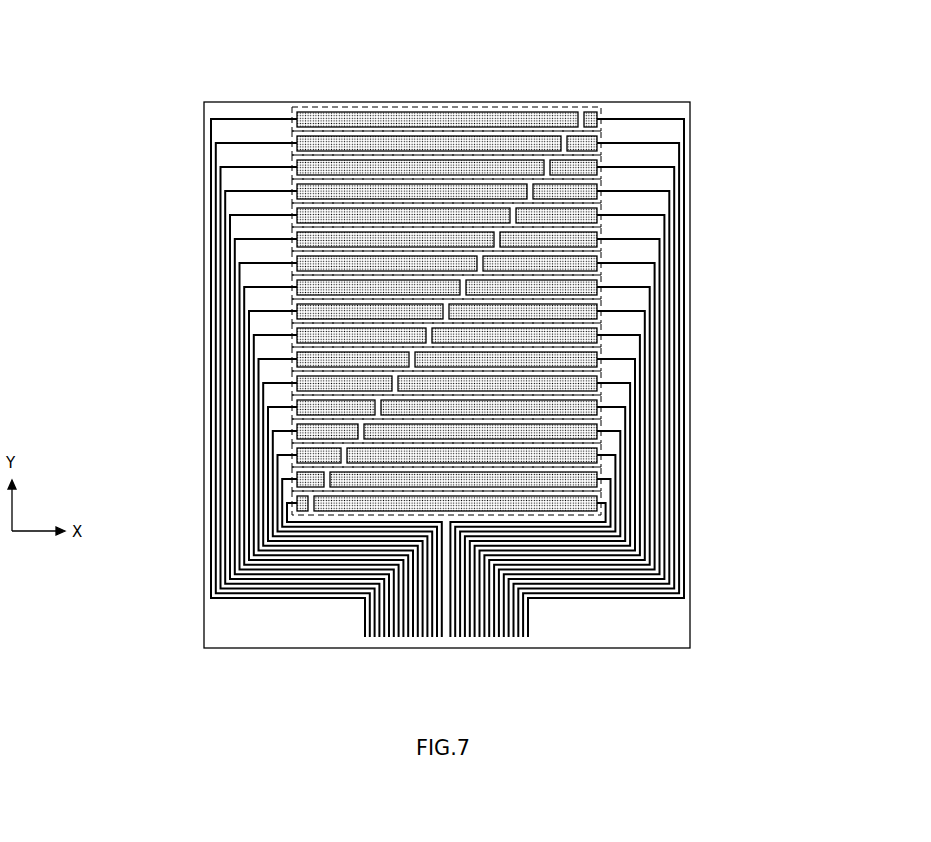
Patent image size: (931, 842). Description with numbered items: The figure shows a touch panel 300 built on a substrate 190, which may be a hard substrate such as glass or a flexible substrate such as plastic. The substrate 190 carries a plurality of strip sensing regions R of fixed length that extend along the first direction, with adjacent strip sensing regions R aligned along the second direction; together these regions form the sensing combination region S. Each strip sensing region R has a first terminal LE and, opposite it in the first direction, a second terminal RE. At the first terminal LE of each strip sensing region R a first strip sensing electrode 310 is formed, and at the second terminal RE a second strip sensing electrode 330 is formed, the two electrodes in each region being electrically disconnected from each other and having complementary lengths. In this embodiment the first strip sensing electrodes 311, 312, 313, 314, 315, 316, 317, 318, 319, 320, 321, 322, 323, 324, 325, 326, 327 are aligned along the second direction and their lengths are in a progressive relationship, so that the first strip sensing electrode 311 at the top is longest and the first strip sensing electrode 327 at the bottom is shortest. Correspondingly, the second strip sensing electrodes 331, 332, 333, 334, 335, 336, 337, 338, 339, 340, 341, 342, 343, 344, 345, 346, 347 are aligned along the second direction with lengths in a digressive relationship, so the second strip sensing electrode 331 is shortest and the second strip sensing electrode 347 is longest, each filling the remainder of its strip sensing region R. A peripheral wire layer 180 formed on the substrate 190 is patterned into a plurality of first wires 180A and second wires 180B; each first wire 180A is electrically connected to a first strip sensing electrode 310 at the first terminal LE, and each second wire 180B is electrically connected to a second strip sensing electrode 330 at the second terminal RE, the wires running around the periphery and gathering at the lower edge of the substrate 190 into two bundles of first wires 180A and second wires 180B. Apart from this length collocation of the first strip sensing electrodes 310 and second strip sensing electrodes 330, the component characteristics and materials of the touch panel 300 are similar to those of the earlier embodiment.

The touch panel 300 is at (767, 89).
The substrate 190 is at (690, 623).
The first strip sensing electrode 310 is at (354, 312).
The first strip sensing electrode 311 is at (296, 122).
The first strip sensing electrode 312 is at (296, 146).
The first strip sensing electrode 313 is at (296, 170).
The first strip sensing electrode 314 is at (296, 194).
The first strip sensing electrode 315 is at (296, 218).
The first strip sensing electrode 316 is at (296, 242).
The first strip sensing electrode 317 is at (296, 266).
The first strip sensing electrode 318 is at (296, 290).
The first strip sensing electrode 319 is at (296, 314).
The first strip sensing electrode 320 is at (296, 338).
The first strip sensing electrode 321 is at (296, 362).
The first strip sensing electrode 322 is at (296, 386).
The first strip sensing electrode 323 is at (296, 410).
The first strip sensing electrode 324 is at (296, 434).
The first strip sensing electrode 325 is at (296, 458).
The first strip sensing electrode 326 is at (296, 482).
The first strip sensing electrode 327 is at (296, 506).
The second strip sensing electrode 330 is at (538, 312).
The second strip sensing electrode 331 is at (598, 122).
The second strip sensing electrode 332 is at (598, 146).
The second strip sensing electrode 333 is at (598, 170).
The second strip sensing electrode 334 is at (598, 194).
The second sensing electrode 335 is at (598, 218).
The second strip sensing electrode 336 is at (598, 242).
The second strip sensing electrode 337 is at (598, 266).
The second strip sensing electrode 338 is at (598, 290).
The second strip sensing electrode 339 is at (598, 314).
The second strip sensing electrode 340 is at (598, 338).
The second strip sensing electrode 341 is at (598, 362).
The second strip sensing electrode 342 is at (598, 386).
The second strip sensing electrode 343 is at (598, 410).
The second strip sensing electrode 344 is at (598, 434).
The second strip sensing electrode 345 is at (598, 458).
The second strip sensing electrode 346 is at (598, 482).
The second strip sensing electrode 347 is at (598, 506).
The peripheral wire layer 180 is at (447, 395).
The first wires 180A is at (442, 639).
The second wires 180B is at (528, 639).
The sensing combination region S is at (120, 517).
The strip sensing region R is at (773, 110).
The first terminal LE is at (296, 110).
The second terminal RE is at (598, 110).